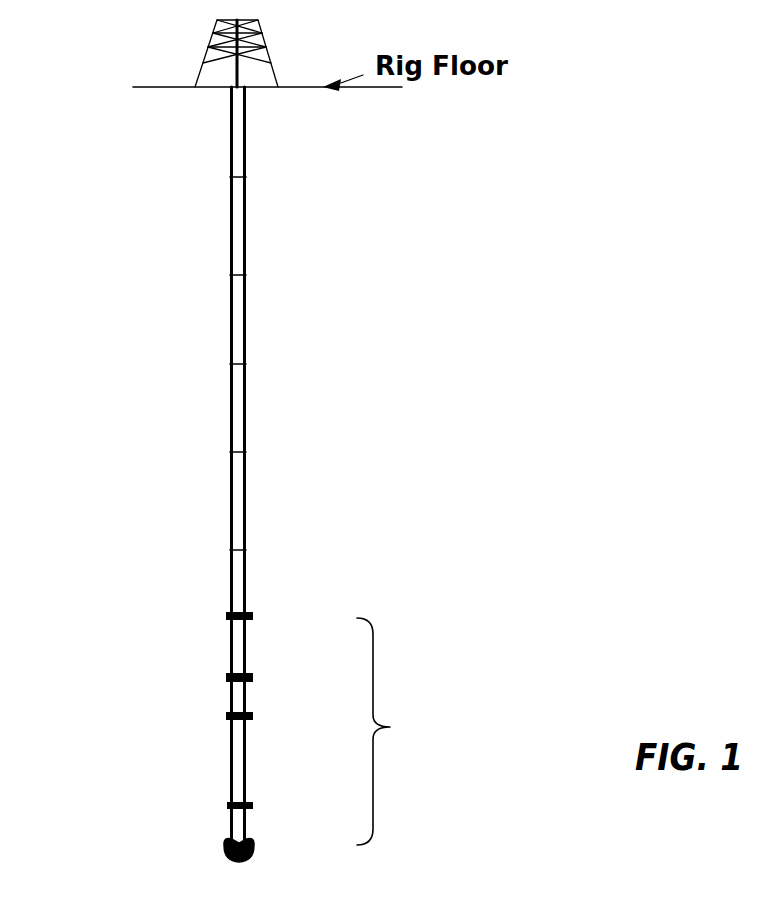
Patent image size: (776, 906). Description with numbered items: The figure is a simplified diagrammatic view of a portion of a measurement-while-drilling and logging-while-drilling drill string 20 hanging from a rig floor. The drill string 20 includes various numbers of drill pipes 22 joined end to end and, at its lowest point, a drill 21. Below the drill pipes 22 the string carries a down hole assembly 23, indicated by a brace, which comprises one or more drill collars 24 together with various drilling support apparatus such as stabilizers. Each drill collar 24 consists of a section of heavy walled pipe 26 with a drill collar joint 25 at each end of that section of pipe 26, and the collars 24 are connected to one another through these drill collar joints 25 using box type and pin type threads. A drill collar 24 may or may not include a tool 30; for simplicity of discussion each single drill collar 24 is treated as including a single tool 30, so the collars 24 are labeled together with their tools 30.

The drill string 20 is at (317, 464).
The drill 21 is at (270, 842).
The drill pipes 22 is at (206, 371).
The down hole assembly 23 is at (405, 731).
The drill collar 24 is at (187, 727).
The drill collar joint 25 is at (279, 697).
The heavy walled pipe 26 is at (171, 711).
The tool 30 is at (205, 727).